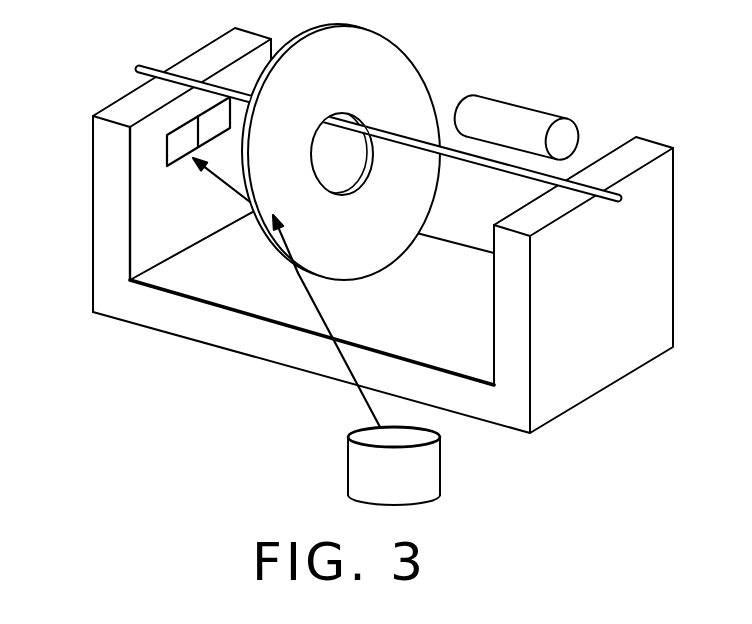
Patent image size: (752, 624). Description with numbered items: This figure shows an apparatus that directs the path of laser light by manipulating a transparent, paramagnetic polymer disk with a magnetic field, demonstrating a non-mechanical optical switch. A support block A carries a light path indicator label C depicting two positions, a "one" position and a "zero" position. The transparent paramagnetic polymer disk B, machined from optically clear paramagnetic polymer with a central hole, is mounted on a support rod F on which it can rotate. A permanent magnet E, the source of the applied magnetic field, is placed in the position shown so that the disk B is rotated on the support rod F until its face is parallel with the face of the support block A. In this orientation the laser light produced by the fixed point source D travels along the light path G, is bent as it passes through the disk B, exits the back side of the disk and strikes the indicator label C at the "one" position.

The support block A is at (185, 317).
The transparent paramagnetic polymer disk B is at (401, 46).
The indicator label C is at (167, 152).
The laser light source D is at (360, 460).
The permanent magnet E is at (519, 106).
The support rod F is at (153, 65).
The light path G is at (362, 395).